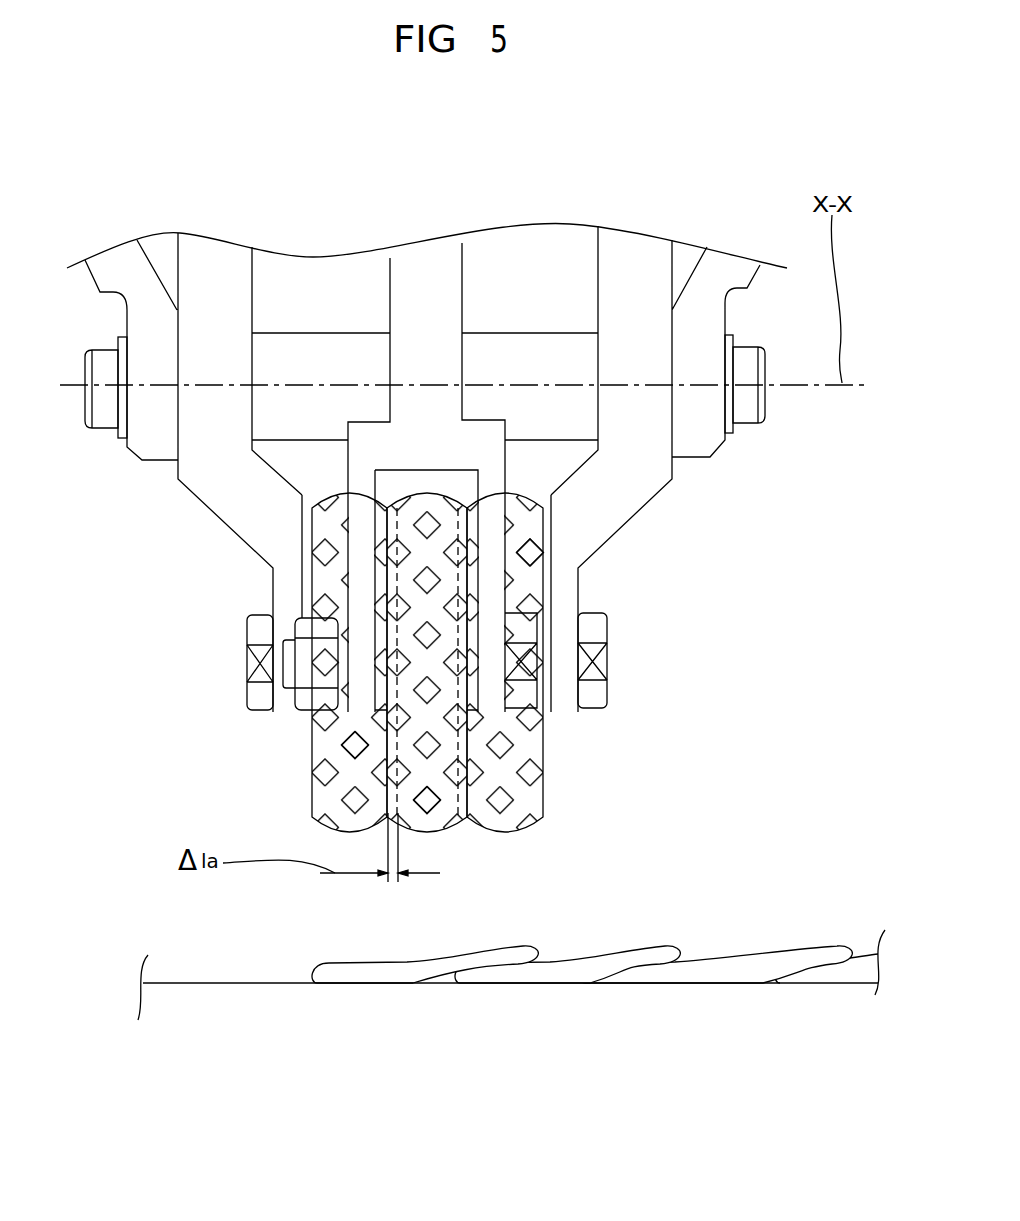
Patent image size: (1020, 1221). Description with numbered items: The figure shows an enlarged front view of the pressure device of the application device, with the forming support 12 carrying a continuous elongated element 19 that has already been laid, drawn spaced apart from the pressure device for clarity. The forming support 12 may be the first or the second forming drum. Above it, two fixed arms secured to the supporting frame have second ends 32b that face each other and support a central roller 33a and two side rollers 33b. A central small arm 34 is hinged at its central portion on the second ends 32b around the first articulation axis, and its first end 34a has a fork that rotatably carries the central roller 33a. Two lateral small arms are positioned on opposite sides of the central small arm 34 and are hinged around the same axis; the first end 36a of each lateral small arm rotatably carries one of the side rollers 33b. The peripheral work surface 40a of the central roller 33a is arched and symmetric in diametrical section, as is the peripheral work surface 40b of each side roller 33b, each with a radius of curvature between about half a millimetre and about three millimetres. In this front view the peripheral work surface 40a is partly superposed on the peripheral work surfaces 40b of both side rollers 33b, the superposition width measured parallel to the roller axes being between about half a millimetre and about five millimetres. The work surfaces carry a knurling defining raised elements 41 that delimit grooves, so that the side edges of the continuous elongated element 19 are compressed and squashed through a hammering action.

The forming support 12 is at (197, 982).
The continuous elongated element 19 is at (367, 975).
The second end 32b is at (157, 440).
The central roller 33a is at (497, 830).
The side roller 33b is at (302, 762).
The central small arm 34 is at (463, 355).
The first end 34a is at (375, 448).
The first end 36a is at (283, 582).
The peripheral work surface 40a is at (430, 722).
The peripheral work surface 40b is at (330, 797).
The raised elements 41 is at (533, 550).